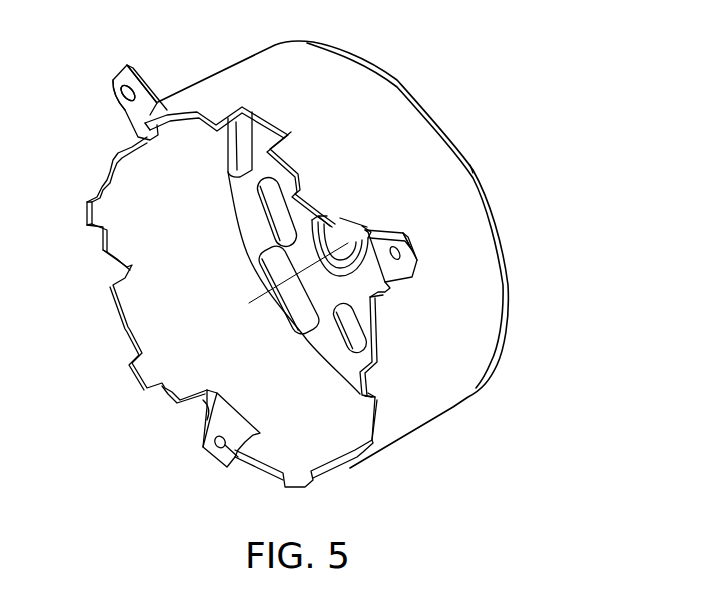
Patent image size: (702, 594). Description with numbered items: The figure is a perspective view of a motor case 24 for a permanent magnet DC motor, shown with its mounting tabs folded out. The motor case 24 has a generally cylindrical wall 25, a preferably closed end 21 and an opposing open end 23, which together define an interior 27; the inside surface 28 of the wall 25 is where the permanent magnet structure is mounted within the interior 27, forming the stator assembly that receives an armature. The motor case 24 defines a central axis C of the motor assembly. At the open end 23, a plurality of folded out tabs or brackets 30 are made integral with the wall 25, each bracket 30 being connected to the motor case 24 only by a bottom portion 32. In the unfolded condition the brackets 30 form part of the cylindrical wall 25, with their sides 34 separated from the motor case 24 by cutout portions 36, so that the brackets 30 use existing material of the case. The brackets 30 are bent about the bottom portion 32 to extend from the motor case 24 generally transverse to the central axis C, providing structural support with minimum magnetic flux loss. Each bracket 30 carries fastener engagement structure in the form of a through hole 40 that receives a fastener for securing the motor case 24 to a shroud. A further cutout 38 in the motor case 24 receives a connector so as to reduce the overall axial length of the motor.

The closed end 21 is at (458, 148).
The open end 23 is at (135, 368).
The motor case 24 is at (493, 293).
The cylindrical wall 25 is at (368, 149).
The interior 27 is at (287, 395).
The inside surface 28 is at (198, 294).
The folded out tabs or brackets 30 is at (140, 75).
The bottom portion 32 is at (223, 410).
The sides 34 is at (160, 98).
The cutout portions 36 is at (378, 305).
The cutout 38 is at (273, 120).
The through hole 40 is at (113, 80).
The central axis C is at (255, 294).